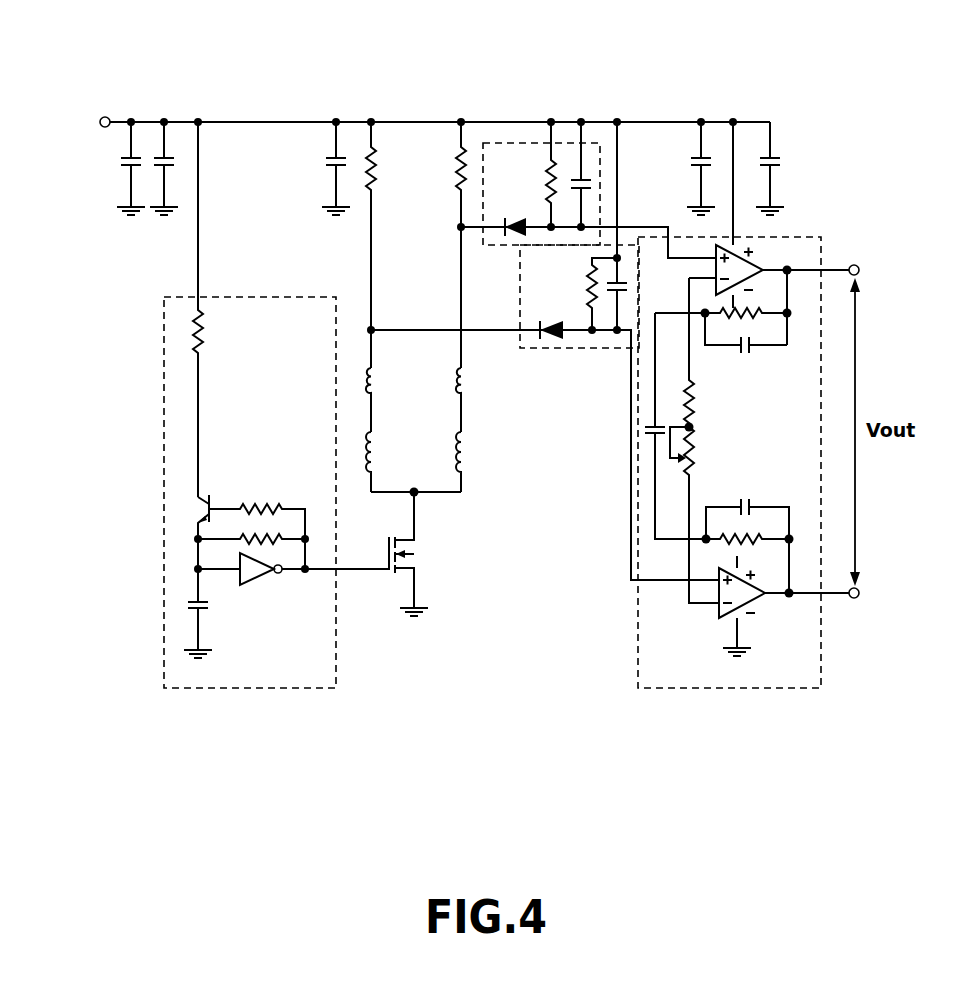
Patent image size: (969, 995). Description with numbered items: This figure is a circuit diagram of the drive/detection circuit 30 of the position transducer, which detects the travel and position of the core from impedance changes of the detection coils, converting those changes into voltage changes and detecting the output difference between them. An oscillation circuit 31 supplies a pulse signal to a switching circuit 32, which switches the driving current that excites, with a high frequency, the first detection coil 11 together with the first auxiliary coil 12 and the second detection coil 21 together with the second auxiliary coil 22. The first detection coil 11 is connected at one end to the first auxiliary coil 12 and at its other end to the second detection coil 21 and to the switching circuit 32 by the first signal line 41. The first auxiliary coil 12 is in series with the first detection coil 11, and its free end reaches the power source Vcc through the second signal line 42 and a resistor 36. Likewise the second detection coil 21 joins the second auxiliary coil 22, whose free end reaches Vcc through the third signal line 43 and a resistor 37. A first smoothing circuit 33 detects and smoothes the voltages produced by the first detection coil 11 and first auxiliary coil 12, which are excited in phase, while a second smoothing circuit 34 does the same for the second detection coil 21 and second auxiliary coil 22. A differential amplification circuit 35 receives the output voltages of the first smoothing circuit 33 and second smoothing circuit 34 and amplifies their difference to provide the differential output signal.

The first detection coil 11 is at (378, 451).
The first auxiliary coil 12 is at (376, 380).
The second detection coil 21 is at (466, 447).
The second auxiliary coil 22 is at (466, 381).
The drive/detection circuit 30 is at (690, 84).
The oscillation circuit 31 is at (250, 297).
The switching circuit 32 is at (462, 556).
The first smoothing circuit 33 is at (571, 350).
The second smoothing circuit 34 is at (493, 246).
The differential amplification circuit 35 is at (638, 622).
The resistor 36 is at (377, 164).
The resistor 37 is at (456, 180).
The first signal line 41 is at (416, 496).
The second signal line 42 is at (371, 346).
The third signal line 43 is at (461, 312).